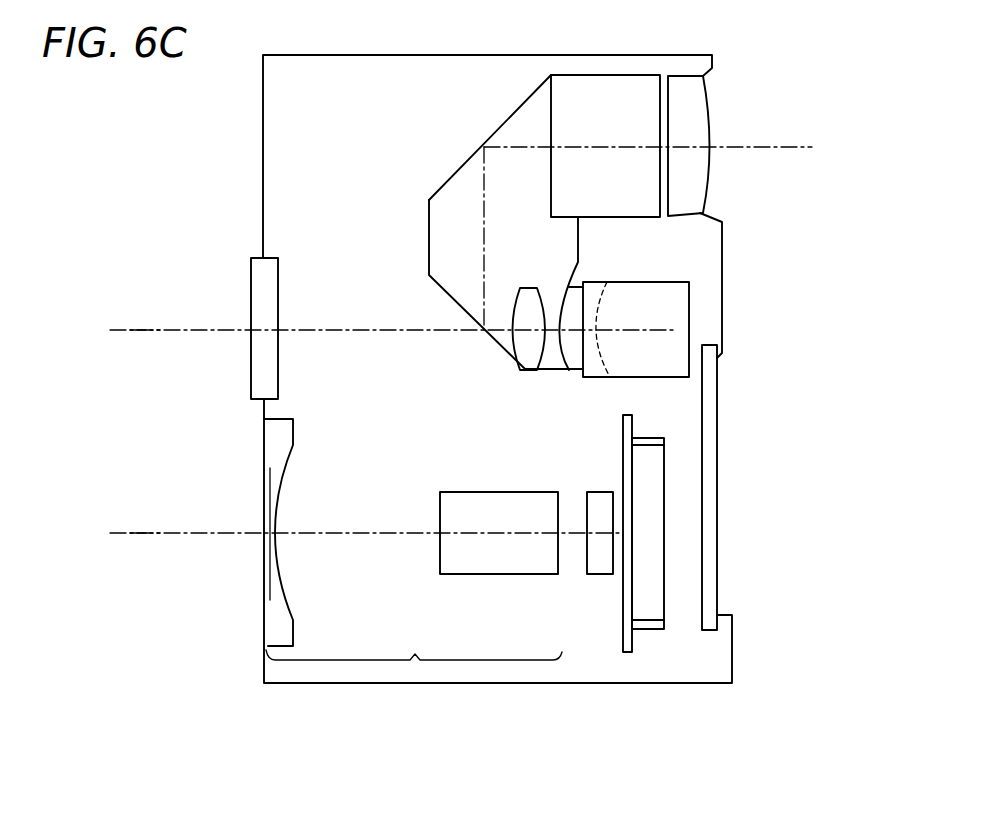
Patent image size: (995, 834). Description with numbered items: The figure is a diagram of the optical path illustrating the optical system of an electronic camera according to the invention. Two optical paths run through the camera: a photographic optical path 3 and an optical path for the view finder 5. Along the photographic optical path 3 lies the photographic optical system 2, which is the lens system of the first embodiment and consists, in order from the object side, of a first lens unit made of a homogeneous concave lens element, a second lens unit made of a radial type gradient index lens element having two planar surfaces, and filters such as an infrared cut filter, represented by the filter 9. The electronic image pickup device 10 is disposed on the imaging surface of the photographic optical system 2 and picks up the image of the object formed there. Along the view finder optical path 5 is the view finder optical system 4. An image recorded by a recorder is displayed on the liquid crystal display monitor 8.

The photographic optical system 2 is at (415, 661).
The photographic optical path 3 is at (137, 533).
The view finder optical system 4 is at (262, 286).
The optical path for the view finder 5 is at (137, 330).
The liquid crystal display monitor 8 is at (712, 457).
The filter 9 is at (600, 570).
The electronic image pickup device 10 is at (646, 612).